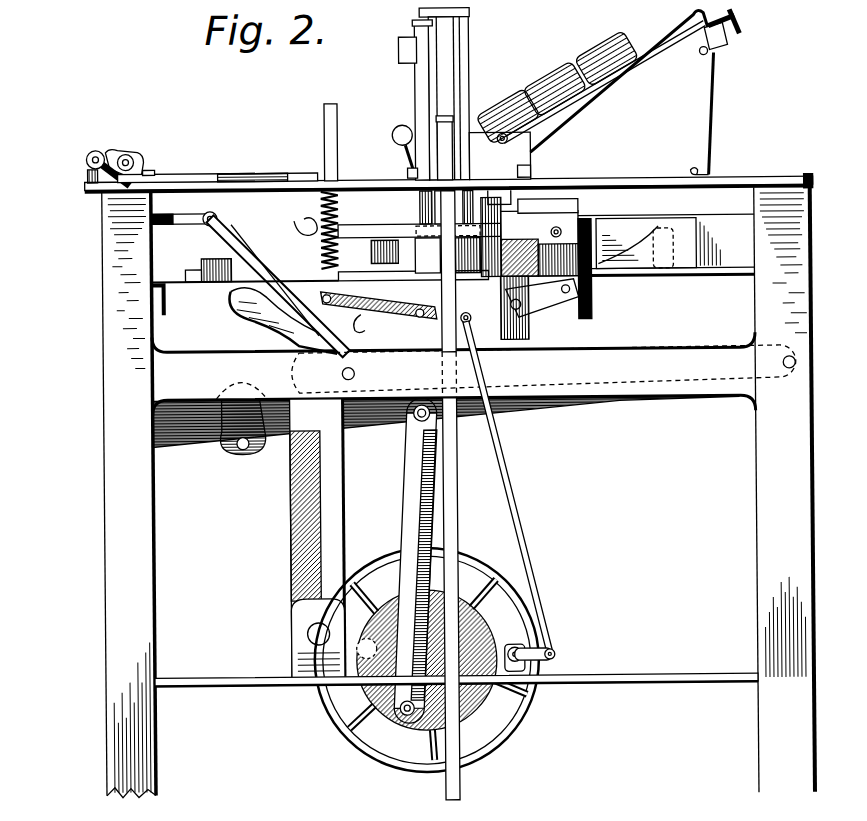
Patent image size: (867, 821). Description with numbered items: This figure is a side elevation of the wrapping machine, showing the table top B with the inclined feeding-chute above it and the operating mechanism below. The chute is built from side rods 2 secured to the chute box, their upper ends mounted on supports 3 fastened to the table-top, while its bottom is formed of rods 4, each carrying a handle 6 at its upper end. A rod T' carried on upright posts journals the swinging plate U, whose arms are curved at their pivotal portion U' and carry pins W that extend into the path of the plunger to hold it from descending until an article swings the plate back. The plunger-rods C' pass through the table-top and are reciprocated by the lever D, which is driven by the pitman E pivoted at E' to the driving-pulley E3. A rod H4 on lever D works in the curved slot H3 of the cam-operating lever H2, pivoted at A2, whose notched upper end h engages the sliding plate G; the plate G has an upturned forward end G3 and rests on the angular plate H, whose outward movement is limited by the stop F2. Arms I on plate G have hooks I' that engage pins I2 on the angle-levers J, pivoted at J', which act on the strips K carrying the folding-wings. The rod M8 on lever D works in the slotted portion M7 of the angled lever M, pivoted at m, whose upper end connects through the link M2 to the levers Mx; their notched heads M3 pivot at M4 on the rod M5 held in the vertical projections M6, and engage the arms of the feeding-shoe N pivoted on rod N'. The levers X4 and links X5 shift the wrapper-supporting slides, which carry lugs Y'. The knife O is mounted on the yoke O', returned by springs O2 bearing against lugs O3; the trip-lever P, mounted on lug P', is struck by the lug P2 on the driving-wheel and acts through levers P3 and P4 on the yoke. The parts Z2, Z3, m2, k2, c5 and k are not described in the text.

The top of the table B is at (638, 172).
The rod T' is at (461, 93).
The swinging rack or plate U is at (401, 102).
The curved upper pivotal portion of the plate arms U' is at (396, 27).
The pin or lug W is at (403, 50).
The side rods 2 is at (657, 40).
The rods 4 is at (678, 68).
The handle 6 is at (745, 31).
The supports 3 is at (716, 100).
The shoe N is at (140, 153).
The rod M5 is at (97, 148).
The notched heads M3 is at (122, 150).
The link M2 is at (112, 149).
The rod N' is at (187, 135).
The vertical projections M6 is at (90, 170).
The levers X4 is at (240, 172).
The lugs Y' is at (252, 155).
The links X5 is at (291, 171).
The yoke O' is at (315, 141).
The knife O is at (369, 125).
The ball handle Z2 is at (405, 125).
The stem Z3 is at (408, 150).
The levers Mx is at (104, 202).
The bar m2 is at (195, 223).
The pivots of the notched heads M4 is at (222, 214).
The rod k2 is at (215, 262).
The sliding plate G is at (236, 254).
The notched portion h is at (305, 225).
The stop F2 is at (192, 277).
The sliding angular plate H is at (213, 278).
The curved elongated slot H3 is at (263, 320).
The lugs O3 is at (341, 203).
The springs O2 is at (340, 226).
The arms I is at (420, 243).
The upwardly turned forward end of plate G G3 is at (365, 300).
The hook c5 is at (358, 324).
The angled lever M is at (335, 330).
The lever P4 is at (420, 320).
The block k is at (497, 244).
The pins I2 is at (560, 229).
The angle-levers J is at (565, 306).
The pivot of the angle-levers J' is at (605, 297).
The strips K is at (530, 337).
The hooks I' is at (666, 256).
The pivot of lever M m is at (356, 373).
The lever D is at (392, 434).
The enlarged slotted portion M7 is at (220, 413).
The rod M8 is at (238, 456).
The cam-operating lever H2 is at (322, 498).
The rod H4 is at (290, 467).
The pivot of lever H2 A2 is at (310, 635).
The pivot of the pitman E' is at (401, 660).
The lug P2 is at (369, 637).
The driving-pulley E3 is at (530, 708).
The pitman E is at (396, 561).
The lever P3 is at (520, 524).
The trip-lever P is at (541, 640).
The lug P' is at (556, 662).
The plunger-rods C' is at (465, 495).